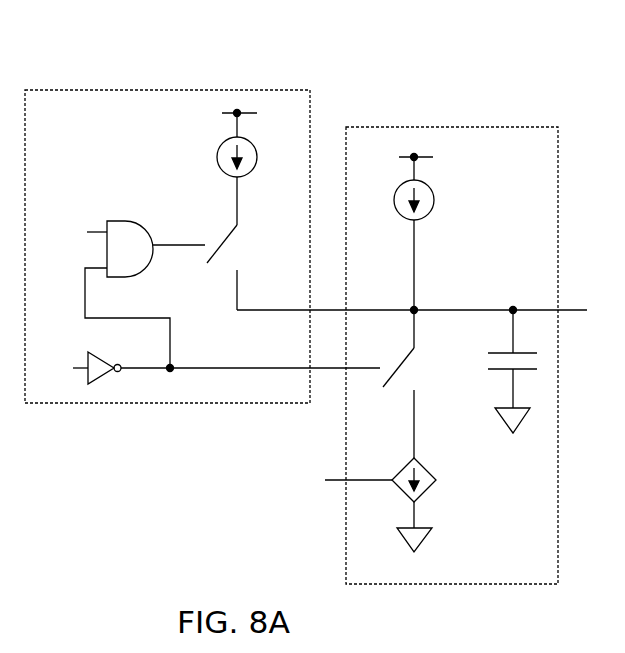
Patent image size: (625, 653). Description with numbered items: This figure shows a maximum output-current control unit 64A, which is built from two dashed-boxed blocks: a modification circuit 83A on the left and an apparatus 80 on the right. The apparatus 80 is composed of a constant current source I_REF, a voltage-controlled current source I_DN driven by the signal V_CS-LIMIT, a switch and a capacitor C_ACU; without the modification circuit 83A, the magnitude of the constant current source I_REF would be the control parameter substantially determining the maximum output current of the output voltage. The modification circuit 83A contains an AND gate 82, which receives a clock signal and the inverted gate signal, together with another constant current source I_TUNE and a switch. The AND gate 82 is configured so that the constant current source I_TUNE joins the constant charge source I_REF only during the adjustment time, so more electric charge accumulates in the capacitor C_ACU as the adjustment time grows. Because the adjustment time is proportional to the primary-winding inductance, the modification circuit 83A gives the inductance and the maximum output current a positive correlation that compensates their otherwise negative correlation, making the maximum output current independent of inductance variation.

The maximum output-current control unit 64A is at (181, 79).
The AND gate 82 is at (137, 257).
The modification circuit 83A is at (167, 403).
The apparatus 80 is at (530, 169).